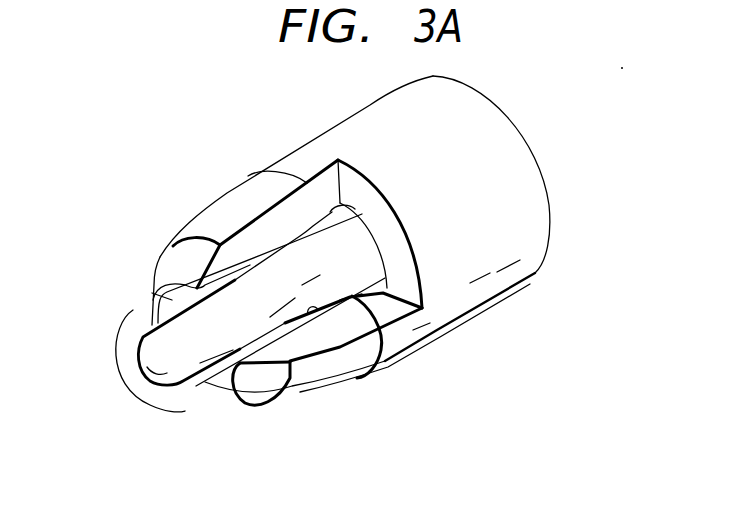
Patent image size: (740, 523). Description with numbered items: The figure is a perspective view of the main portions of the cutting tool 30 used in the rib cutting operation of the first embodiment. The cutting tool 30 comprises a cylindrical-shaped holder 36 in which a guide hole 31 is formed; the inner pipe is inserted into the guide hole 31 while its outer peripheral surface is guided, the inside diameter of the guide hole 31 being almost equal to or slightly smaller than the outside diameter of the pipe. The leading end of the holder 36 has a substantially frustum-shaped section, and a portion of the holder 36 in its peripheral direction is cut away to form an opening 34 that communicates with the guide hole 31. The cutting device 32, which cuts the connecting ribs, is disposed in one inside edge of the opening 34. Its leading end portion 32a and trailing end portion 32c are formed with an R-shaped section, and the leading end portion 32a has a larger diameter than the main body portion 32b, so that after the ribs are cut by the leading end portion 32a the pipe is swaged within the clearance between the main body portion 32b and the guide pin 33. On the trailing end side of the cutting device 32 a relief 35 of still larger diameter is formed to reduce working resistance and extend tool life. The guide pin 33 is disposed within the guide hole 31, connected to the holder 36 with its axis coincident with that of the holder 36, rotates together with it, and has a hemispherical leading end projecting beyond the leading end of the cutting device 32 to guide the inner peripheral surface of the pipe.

The cutting tool 30 is at (222, 92).
The guide hole 31 is at (150, 308).
The cutting device 32 is at (289, 334).
The leading end portion 32a is at (253, 363).
The main body portion 32b is at (322, 294).
The trailing end portion 32c is at (353, 296).
The guide pin 33 is at (185, 355).
The opening 34 is at (393, 233).
The relief 35 is at (347, 206).
The holder 36 is at (528, 192).